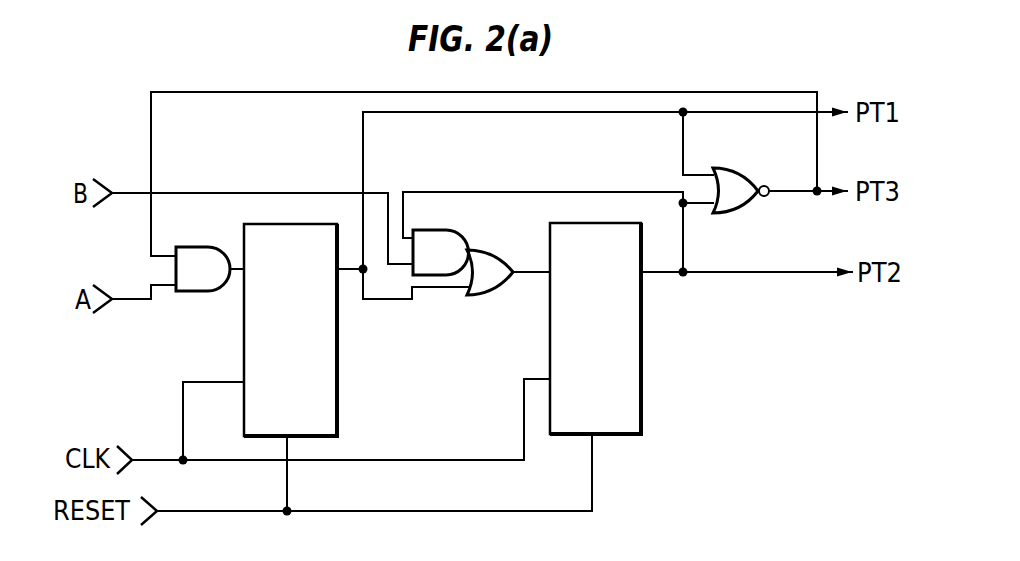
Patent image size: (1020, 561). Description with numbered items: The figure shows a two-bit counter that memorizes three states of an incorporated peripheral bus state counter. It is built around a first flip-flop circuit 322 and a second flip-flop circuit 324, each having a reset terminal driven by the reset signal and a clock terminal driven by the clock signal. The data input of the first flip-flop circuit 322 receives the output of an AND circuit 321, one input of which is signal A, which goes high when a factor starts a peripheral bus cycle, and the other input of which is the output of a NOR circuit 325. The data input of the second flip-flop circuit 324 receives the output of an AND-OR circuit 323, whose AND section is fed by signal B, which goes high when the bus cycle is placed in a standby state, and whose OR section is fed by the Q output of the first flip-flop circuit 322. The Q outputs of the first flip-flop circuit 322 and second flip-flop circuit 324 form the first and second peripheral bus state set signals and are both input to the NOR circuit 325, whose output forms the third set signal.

The AND circuit 321 is at (217, 297).
The first flip-flop circuit 322 is at (340, 376).
The AND-OR circuit 323 is at (443, 228).
The second flip-flop circuit 324 is at (641, 375).
The NOR circuit 325 is at (728, 165).